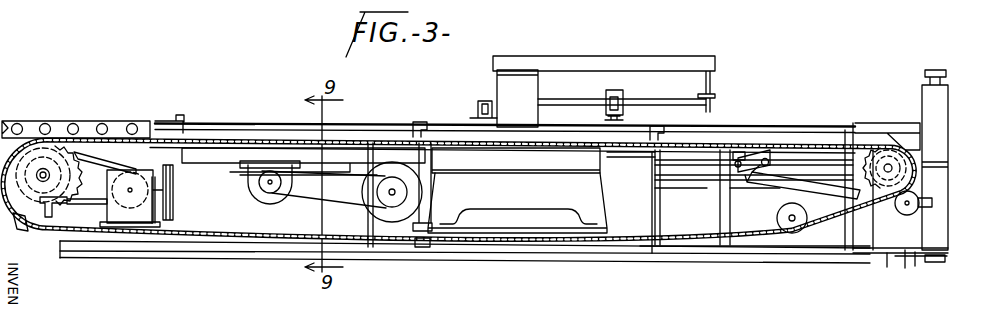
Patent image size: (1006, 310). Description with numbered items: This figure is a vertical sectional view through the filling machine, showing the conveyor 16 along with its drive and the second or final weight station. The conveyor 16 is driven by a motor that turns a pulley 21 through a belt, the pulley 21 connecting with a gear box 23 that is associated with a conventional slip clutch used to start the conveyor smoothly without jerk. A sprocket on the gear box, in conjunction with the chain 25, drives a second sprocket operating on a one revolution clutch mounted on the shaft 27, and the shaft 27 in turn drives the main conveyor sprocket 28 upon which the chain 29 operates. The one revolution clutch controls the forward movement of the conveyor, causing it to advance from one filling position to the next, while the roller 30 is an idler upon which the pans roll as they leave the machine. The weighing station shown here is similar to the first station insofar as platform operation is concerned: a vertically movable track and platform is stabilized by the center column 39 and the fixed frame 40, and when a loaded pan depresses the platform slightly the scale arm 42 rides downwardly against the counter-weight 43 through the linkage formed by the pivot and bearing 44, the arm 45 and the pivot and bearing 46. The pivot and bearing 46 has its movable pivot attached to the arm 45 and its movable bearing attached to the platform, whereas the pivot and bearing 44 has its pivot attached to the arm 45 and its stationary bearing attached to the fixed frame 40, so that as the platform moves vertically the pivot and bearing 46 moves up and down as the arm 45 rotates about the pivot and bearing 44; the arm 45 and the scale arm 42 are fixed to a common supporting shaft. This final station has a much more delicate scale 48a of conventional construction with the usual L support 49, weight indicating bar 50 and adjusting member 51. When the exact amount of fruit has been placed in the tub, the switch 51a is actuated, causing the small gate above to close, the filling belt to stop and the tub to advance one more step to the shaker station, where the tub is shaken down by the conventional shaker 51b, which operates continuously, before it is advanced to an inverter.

The conveyor 16 is at (867, 142).
The pulley 21 is at (174, 204).
The gear box 23 is at (143, 220).
The chain 25 is at (92, 203).
The shaft 27 is at (44, 172).
The main conveyor sprocket 28 is at (82, 160).
The chain 29 is at (553, 238).
The roller 30 is at (16, 124).
The center column 39 is at (723, 221).
The fixed frame 40 is at (755, 251).
The scale arm 42 is at (781, 178).
The counter-weight 43 is at (920, 216).
The pivot and bearing 44 is at (760, 167).
The arm 45 is at (762, 168).
The pivot and bearing 46 is at (740, 152).
The scale 48a is at (497, 82).
The L support 49 is at (558, 56).
The weight indicating bar 50 is at (570, 102).
The adjusting member 51 is at (620, 96).
The switch 51a is at (483, 115).
The shaker 51b is at (254, 197).